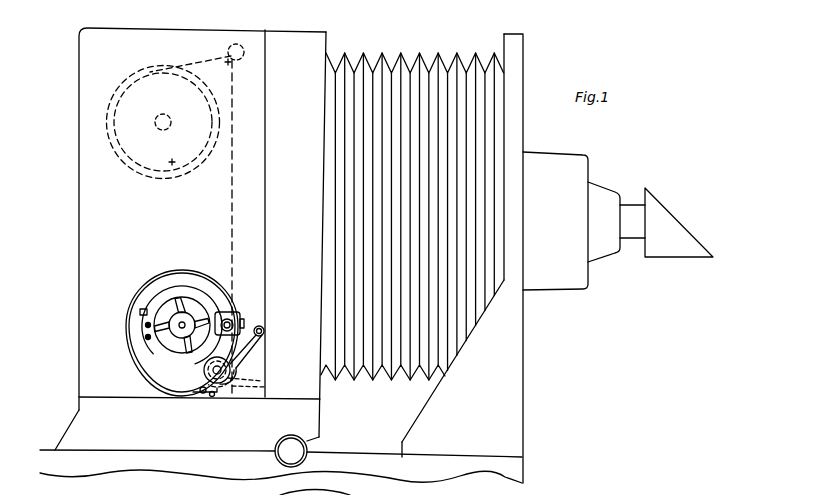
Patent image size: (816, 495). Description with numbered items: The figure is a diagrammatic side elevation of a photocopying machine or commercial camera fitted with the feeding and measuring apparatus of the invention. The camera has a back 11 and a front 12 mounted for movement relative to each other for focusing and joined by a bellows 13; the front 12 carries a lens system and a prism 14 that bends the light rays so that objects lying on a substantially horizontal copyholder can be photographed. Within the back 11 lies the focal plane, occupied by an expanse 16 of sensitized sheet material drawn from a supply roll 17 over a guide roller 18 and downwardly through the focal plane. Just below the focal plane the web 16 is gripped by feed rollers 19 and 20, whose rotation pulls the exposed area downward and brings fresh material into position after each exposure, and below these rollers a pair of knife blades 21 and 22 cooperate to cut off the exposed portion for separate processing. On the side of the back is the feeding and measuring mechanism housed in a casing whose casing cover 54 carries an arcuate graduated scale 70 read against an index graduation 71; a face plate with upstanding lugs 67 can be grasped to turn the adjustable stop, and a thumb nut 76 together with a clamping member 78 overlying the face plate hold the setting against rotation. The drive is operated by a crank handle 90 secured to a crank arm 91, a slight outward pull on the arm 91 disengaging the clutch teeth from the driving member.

The back 11 is at (322, 46).
The front 12 is at (520, 92).
The bellows 13 is at (425, 63).
The prism 14 is at (673, 223).
The expanse of sensitized sheet material 16 is at (232, 188).
The supply roll 17 is at (173, 178).
The guide roller 18 is at (234, 70).
The feed roller 19 is at (178, 394).
The feed roller 20 is at (240, 372).
The knife blade 21 is at (245, 386).
The knife blade 22 is at (212, 400).
The casing cover 54 is at (229, 314).
The upstanding lugs 67 is at (184, 303).
The graduated scale 70 is at (147, 296).
The index graduation 71 is at (140, 310).
The thumb nut 76 is at (177, 337).
The clamping member 78 is at (244, 317).
The crank handle 90 is at (264, 330).
The crank arm 91 is at (250, 347).